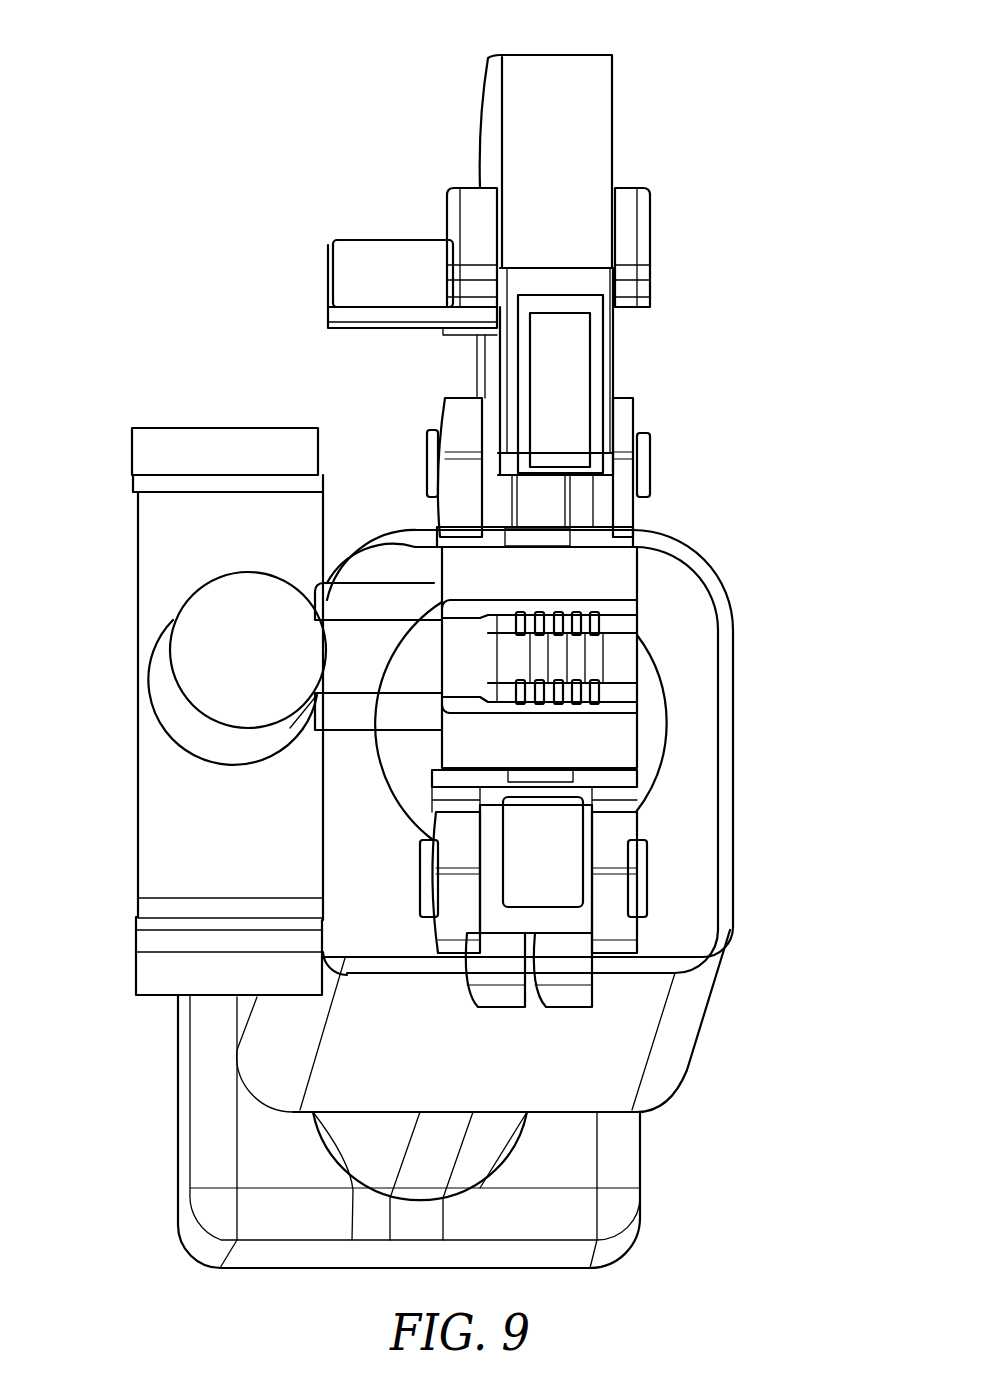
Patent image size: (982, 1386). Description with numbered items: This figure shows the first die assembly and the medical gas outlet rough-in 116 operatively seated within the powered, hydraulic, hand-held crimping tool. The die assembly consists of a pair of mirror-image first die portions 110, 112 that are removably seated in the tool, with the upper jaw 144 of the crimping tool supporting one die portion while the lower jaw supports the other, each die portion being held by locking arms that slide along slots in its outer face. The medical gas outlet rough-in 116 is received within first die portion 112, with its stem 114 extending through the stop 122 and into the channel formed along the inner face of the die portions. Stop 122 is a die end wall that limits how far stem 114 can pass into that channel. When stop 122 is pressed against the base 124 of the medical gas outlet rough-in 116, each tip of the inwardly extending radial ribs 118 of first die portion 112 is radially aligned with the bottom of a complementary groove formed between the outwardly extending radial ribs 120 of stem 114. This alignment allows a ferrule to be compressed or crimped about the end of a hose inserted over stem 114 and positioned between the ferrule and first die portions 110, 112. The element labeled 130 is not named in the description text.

The first die portion 110 is at (281, 549).
The first die portion 112 is at (640, 575).
The stem 114 is at (398, 657).
The medical gas outlet rough-in 116 is at (250, 681).
The inwardly extending radial ribs 118 is at (622, 624).
The radial ribs 120 is at (637, 680).
The stop 122 is at (328, 257).
The base 124 is at (187, 727).
The carriage block 130 is at (637, 740).
The upper jaw 144 is at (543, 62).